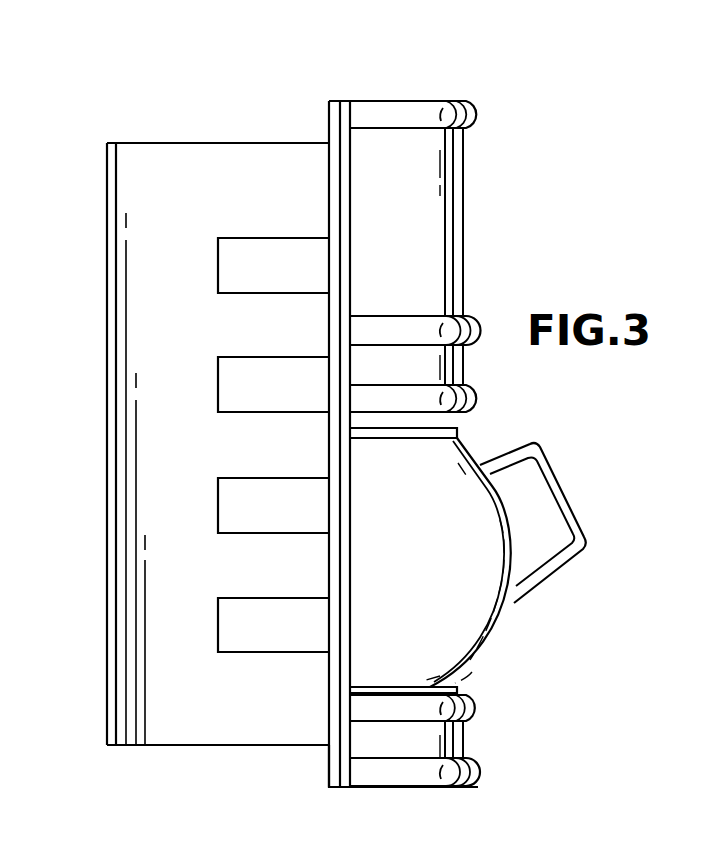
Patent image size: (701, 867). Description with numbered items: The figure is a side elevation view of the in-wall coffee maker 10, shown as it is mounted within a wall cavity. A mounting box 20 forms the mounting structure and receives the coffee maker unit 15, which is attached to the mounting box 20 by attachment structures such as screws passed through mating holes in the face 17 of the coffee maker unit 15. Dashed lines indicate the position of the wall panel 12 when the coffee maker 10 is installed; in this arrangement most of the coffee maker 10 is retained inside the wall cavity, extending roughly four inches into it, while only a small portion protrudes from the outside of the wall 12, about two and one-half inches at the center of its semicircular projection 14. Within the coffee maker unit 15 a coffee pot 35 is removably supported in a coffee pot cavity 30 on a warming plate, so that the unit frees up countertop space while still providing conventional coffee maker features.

The in-wall coffee maker 10 is at (552, 118).
The wall panel 12 is at (329, 768).
The semicircular projection 14 is at (482, 91).
The coffee maker unit 15 is at (434, 792).
The face 17 is at (467, 230).
The mounting box 20 is at (102, 183).
The coffee pot cavity 30 is at (442, 420).
The coffee pot 35 is at (505, 626).